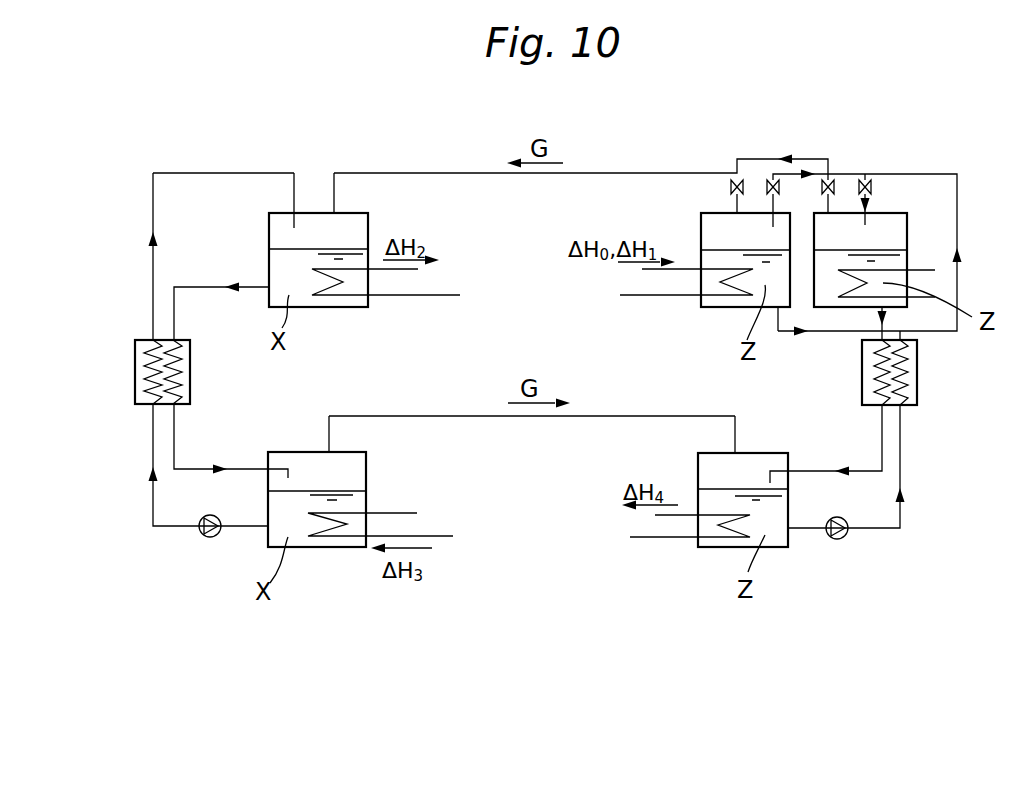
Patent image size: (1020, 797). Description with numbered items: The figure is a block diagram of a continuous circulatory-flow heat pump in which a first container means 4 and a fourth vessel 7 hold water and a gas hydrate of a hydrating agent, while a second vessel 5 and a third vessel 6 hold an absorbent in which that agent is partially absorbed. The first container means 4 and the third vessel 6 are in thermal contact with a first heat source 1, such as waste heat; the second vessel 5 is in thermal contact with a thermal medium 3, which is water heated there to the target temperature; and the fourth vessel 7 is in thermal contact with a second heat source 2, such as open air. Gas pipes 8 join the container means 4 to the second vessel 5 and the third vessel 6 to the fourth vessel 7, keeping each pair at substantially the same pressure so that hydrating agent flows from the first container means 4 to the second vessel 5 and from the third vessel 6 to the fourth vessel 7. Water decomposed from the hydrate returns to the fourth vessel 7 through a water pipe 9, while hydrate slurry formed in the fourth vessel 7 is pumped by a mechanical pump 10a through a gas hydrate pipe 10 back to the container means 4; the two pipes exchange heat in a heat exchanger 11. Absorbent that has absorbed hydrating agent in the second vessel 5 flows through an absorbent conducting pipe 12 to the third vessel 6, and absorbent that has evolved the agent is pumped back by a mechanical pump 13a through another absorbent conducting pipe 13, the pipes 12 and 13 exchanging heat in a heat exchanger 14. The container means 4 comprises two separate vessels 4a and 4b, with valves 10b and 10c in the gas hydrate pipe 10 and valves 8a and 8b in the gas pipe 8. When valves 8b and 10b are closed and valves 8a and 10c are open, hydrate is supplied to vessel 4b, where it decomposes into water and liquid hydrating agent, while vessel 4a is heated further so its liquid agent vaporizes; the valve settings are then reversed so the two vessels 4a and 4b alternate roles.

The first heat source 1 is at (653, 295).
The second heat source 2 is at (658, 537).
The thermal medium 3 is at (413, 296).
The first container means 4 is at (898, 98).
The vessel 4a is at (703, 213).
The vessel 4b is at (907, 213).
The second reaction vessel 5 is at (347, 212).
The third reaction vessel 6 is at (345, 547).
The fourth reaction vessel 7 is at (785, 547).
The gas pipe 8 is at (623, 173).
The valve 8a is at (743, 180).
The valve 8b is at (834, 187).
The water pipe 9 is at (878, 448).
The gas hydrate pipe 10 is at (960, 218).
The mechanical pump 10a is at (847, 537).
The valve 10b is at (778, 180).
The valve 10c is at (872, 188).
The heat exchanger 11 is at (918, 373).
The absorbent conducting pipe 12 is at (197, 468).
The absorbent conducting pipe 13 is at (153, 527).
The mechanical pump 13a is at (208, 537).
The heat exchanger 14 is at (135, 367).